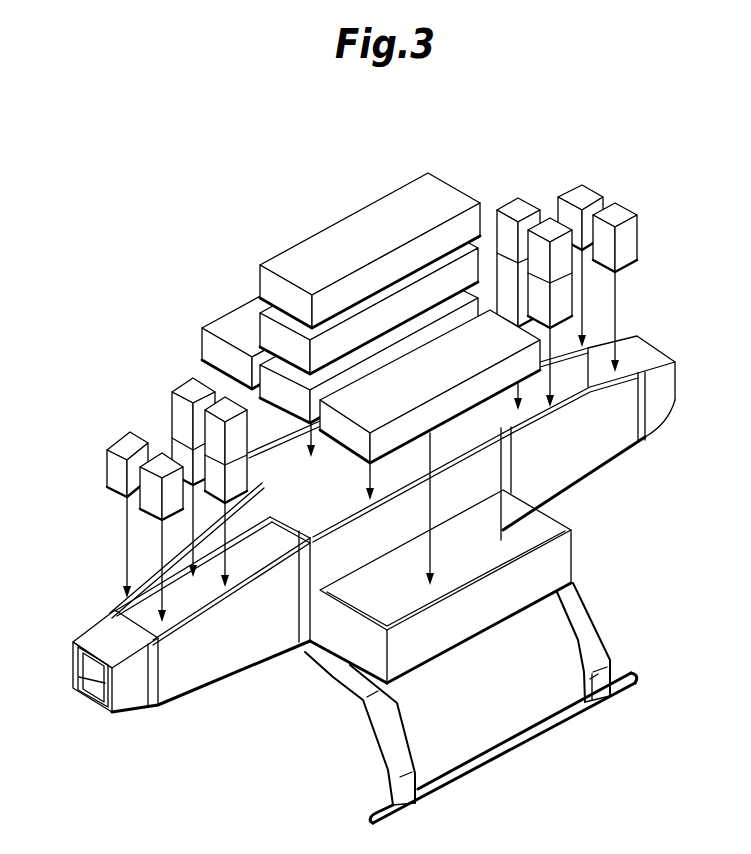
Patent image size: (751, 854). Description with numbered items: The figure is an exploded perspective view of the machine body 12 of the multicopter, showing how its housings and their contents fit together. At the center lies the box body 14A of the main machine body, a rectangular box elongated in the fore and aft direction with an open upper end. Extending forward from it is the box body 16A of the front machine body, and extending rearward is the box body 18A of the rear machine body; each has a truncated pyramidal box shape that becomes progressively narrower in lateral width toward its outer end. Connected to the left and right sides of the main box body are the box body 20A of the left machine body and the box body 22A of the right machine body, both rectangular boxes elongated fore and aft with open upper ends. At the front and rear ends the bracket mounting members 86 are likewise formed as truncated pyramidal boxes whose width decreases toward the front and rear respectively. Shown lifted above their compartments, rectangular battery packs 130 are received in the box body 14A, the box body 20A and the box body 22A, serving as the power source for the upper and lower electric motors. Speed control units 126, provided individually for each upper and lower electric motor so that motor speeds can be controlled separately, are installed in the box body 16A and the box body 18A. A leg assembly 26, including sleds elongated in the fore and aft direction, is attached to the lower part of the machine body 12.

The machine body 12 is at (600, 471).
The box body of the main machine body 14A is at (343, 560).
The box body of the front machine body 16A is at (218, 665).
The box body of the rear machine body 18A is at (617, 445).
The box body of the left machine body 20A is at (572, 565).
The box body of the right machine body 22A is at (292, 452).
The leg assembly 26 is at (598, 648).
The bracket mounting member 86 is at (134, 700).
The speed control unit 126 is at (177, 442).
The battery pack 130 is at (423, 297).